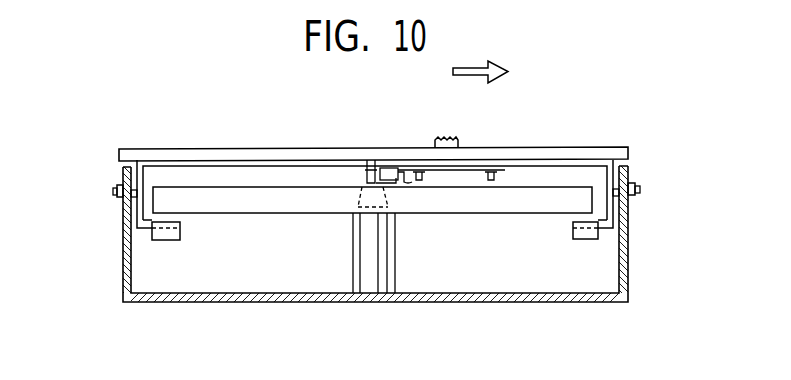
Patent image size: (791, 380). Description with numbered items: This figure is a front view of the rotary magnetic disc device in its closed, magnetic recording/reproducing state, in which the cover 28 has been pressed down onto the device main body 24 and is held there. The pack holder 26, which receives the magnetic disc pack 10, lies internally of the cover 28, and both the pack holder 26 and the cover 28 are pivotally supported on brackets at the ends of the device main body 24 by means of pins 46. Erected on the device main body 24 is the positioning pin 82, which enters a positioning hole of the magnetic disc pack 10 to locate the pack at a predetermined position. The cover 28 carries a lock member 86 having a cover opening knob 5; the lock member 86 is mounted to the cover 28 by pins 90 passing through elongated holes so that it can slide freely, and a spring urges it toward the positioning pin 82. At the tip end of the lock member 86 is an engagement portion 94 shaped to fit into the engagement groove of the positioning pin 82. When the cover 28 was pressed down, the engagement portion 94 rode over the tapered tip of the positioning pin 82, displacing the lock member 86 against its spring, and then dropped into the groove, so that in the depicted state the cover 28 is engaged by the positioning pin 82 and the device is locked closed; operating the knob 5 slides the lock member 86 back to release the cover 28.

The cover opening knob 5 is at (471, 116).
The magnetic disc pack 10 is at (241, 214).
The device main body 24 is at (493, 302).
The pack holder 26 is at (214, 172).
The cover 28 is at (318, 153).
The pins 46 is at (114, 192).
The positioning pin 82 is at (365, 249).
The lock member 86 is at (462, 138).
The pins 90 is at (404, 170).
The engagement portion 94 is at (388, 183).